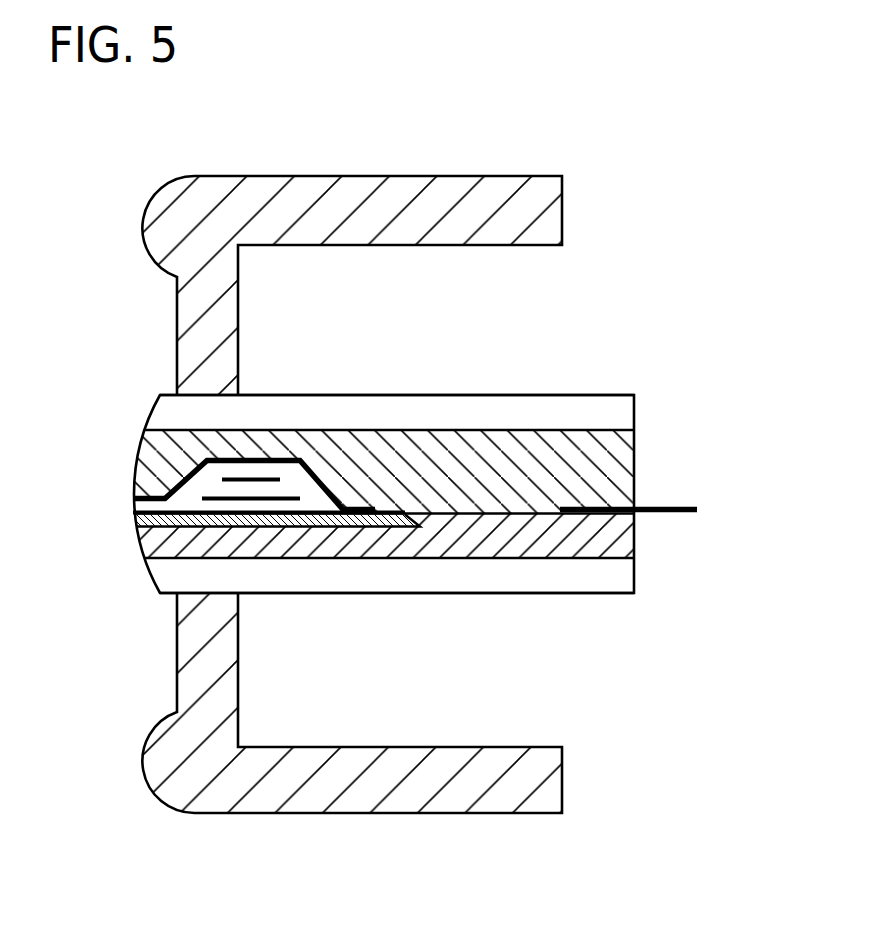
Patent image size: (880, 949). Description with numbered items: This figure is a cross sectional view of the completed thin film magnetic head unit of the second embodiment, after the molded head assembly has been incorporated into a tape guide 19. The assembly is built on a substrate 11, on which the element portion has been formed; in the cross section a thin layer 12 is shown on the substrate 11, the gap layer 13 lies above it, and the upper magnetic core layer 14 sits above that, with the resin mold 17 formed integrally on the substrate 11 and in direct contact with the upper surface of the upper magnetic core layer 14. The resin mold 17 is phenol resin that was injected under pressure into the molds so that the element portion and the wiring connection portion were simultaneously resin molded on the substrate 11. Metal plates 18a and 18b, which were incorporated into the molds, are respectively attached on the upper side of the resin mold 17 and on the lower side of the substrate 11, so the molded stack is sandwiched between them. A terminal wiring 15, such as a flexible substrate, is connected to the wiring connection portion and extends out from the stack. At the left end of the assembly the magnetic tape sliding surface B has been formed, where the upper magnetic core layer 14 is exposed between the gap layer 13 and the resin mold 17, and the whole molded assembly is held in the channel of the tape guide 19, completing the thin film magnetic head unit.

The substrate 11 is at (634, 537).
The insulating layer 12 is at (400, 517).
The gap layer 13 is at (133, 508).
The upper magnetic core layer 14 is at (325, 490).
The terminal wiring 15 is at (660, 505).
The resin mold 17 is at (530, 457).
The metal plate 18a is at (634, 412).
The metal plate 18b is at (634, 579).
The tape guide 19 is at (507, 238).
The magnetic tape sliding surface B is at (105, 453).